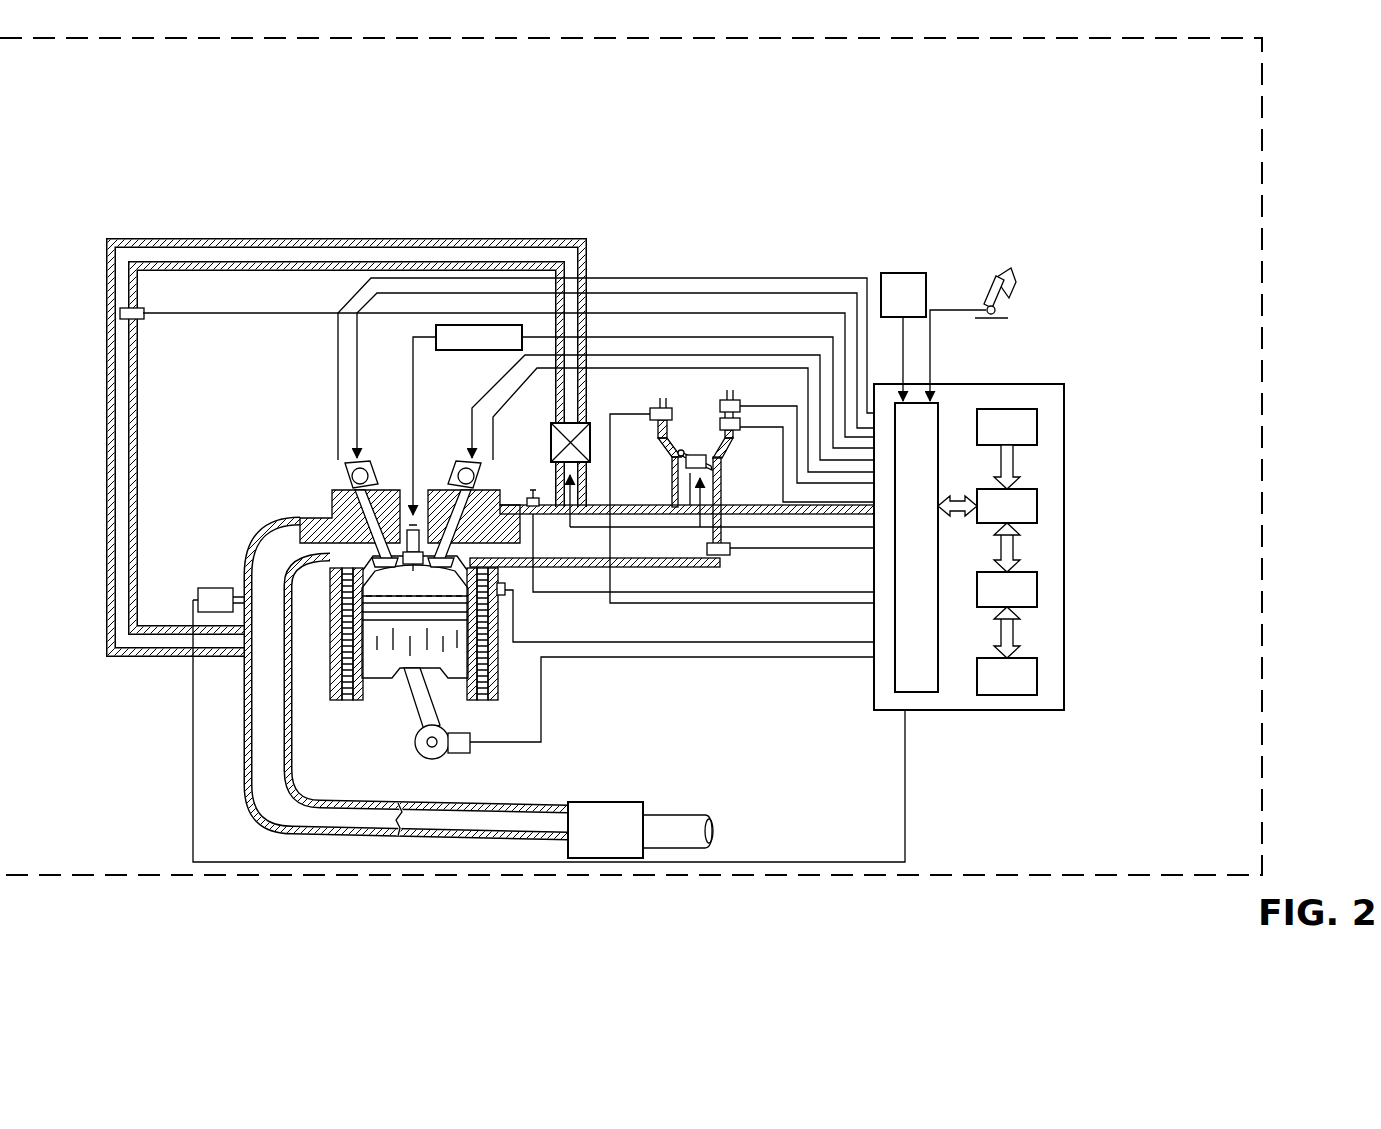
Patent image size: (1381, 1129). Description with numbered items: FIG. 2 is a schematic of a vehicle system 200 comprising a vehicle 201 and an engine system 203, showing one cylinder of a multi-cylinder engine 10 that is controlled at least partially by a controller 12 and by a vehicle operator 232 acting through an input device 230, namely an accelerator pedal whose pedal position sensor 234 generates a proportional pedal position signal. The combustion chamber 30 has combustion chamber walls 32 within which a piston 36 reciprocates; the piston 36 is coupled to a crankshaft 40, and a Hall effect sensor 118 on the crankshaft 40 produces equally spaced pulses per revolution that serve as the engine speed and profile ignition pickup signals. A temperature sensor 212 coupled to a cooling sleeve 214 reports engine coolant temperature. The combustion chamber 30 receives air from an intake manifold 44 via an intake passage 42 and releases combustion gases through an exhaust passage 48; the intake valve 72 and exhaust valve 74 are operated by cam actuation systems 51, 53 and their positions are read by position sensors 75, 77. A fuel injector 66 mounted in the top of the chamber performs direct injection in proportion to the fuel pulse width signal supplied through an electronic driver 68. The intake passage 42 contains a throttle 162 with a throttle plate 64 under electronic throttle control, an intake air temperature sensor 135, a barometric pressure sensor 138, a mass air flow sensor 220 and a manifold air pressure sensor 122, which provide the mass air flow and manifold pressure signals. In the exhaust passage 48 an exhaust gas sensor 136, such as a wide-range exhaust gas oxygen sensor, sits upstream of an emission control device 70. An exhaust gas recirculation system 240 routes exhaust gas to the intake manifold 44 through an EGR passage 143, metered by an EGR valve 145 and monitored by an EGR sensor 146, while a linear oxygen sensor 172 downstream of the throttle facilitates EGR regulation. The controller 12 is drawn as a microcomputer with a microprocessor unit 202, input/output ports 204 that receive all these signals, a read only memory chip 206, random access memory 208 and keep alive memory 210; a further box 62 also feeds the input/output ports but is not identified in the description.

The engine 10 is at (518, 532).
The controller 12 is at (996, 536).
The combustion chamber 30 is at (342, 655).
The combustion chamber walls 32 is at (352, 700).
The piston 36 is at (400, 680).
The crankshaft 40 is at (422, 755).
The intake passage 42 is at (695, 482).
The intake manifold 44 is at (681, 548).
The exhaust passage 48 is at (408, 678).
The cam actuation system 51 is at (465, 458).
The cam actuation system 53 is at (365, 458).
The input device 62 is at (903, 337).
The throttle plate 64 is at (675, 457).
The fuel injector 66 is at (416, 522).
The electronic driver 68 is at (500, 350).
The emission control device 70 is at (640, 830).
The intake valve 72 is at (470, 545).
The exhaust valve 74 is at (342, 507).
The position sensor 75 is at (492, 488).
The position sensor 77 is at (348, 487).
The Hall effect sensor 118 is at (462, 755).
The manifold air pressure sensor 122 is at (732, 555).
The intake air temperature sensor 135 is at (720, 424).
The exhaust gas sensor 136 is at (198, 596).
The barometric pressure sensor 138 is at (650, 414).
The EGR passage 143 is at (108, 332).
The EGR valve 145 is at (551, 445).
The EGR sensor 146 is at (143, 319).
The throttle 162 is at (716, 468).
The linear oxygen sensor 172 is at (537, 514).
The vehicle system 200 is at (1292, 90).
The vehicle 201 is at (1262, 522).
The microprocessor unit 202 is at (1037, 512).
The engine system 203 is at (802, 250).
The input/output ports 204 is at (940, 410).
The read only memory chip 206 is at (1037, 432).
The random access memory 208 is at (1037, 595).
The keep alive memory 210 is at (1037, 682).
The temperature sensor 212 is at (505, 598).
The cooling sleeve 214 is at (490, 668).
The mass air flow sensor 220 is at (720, 404).
The input device 230 is at (980, 300).
The vehicle operator 232 is at (1016, 284).
The pedal position sensor 234 is at (1008, 318).
The exhaust gas recirculation system 240 is at (467, 238).